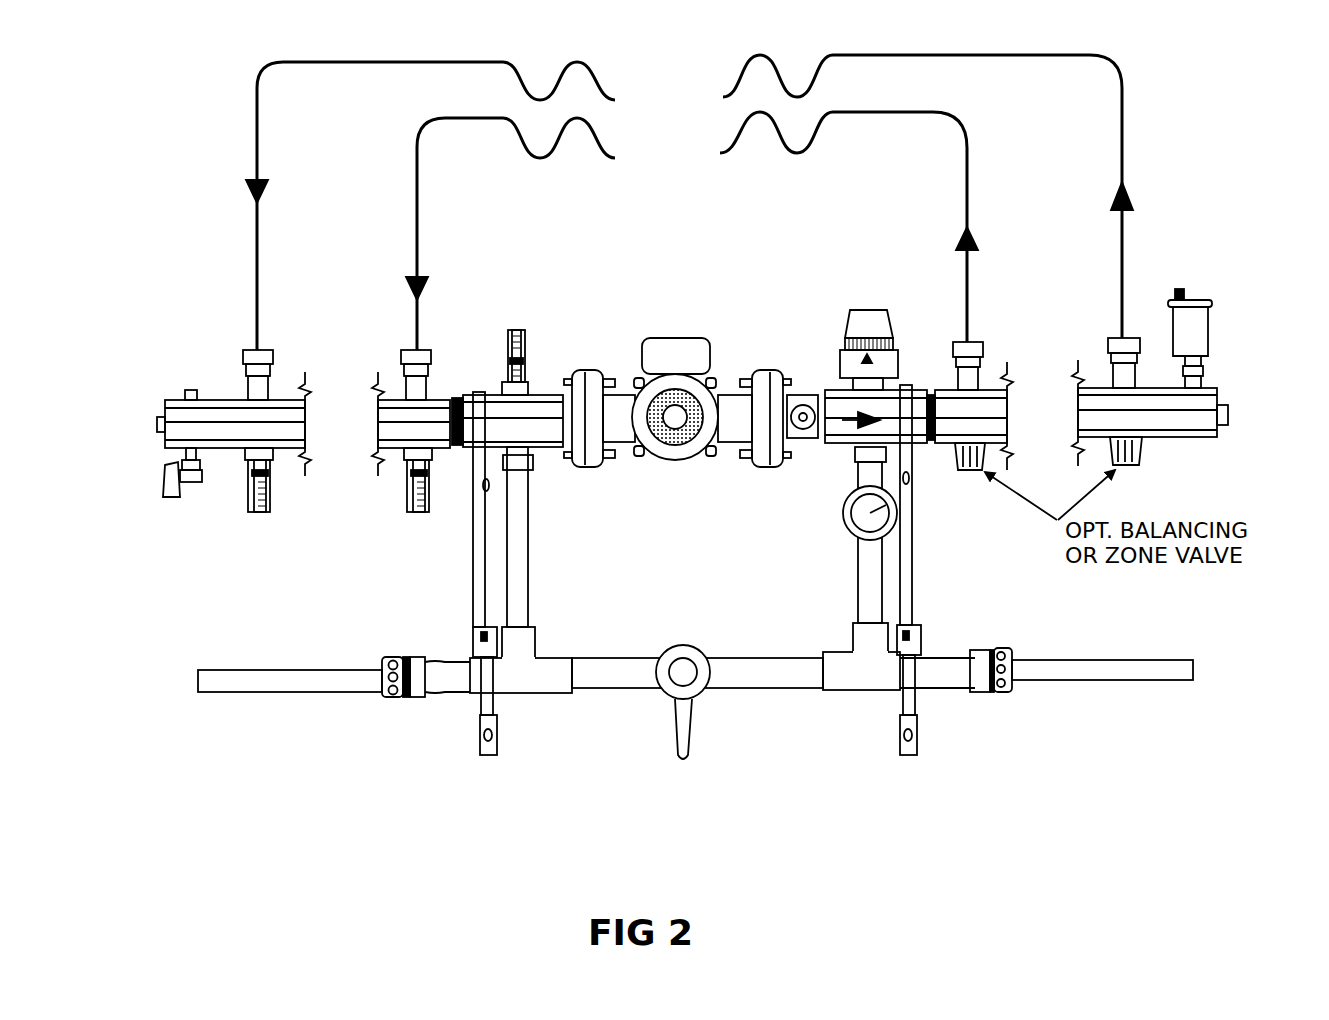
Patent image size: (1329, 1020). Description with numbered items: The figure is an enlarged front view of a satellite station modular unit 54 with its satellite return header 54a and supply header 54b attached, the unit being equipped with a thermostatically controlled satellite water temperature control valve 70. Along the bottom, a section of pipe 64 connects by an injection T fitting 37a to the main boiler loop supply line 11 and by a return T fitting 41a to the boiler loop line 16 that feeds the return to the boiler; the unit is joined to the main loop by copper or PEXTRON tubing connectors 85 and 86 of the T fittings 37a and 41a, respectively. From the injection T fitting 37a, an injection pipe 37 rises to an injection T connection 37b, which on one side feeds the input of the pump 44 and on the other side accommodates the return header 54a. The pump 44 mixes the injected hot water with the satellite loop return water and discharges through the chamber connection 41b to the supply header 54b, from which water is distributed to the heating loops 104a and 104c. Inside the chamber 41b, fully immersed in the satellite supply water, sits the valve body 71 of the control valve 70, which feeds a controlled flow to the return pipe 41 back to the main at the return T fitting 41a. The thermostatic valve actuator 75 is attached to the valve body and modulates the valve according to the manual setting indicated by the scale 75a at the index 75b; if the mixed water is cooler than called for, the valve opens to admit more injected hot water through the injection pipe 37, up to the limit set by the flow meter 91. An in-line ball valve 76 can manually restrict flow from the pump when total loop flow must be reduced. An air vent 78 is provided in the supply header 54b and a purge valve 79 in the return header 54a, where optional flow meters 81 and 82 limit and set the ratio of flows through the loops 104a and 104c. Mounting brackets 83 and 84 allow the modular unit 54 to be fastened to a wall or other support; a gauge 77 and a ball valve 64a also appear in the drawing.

The main boiler loop supply line 11 is at (255, 695).
The boiler loop line 16 is at (1120, 680).
The injection pipe 37 is at (532, 555).
The injection T fitting 37a is at (525, 695).
The injection T connection 37b is at (490, 310).
The return pipe 41 is at (860, 570).
The return T fitting 41a is at (872, 690).
The chamber connection 41b is at (832, 390).
The pump 44 is at (650, 323).
The modular unit 54 is at (678, 185).
The return header 54a is at (165, 410).
The supply header 54b is at (1218, 398).
The section of pipe 64 is at (612, 658).
The ball valve 64a is at (733, 710).
The temperature control valve 70 is at (870, 305).
The valve body 71 is at (830, 445).
The valve actuator 75 is at (888, 308).
The scale 75a is at (892, 342).
The index 75b is at (876, 358).
The in-line ball valve 76 is at (790, 332).
The pressure gauge 77 is at (845, 523).
The air vent 78 is at (1197, 300).
The purge valve 79 is at (190, 493).
The flow meter 81 is at (253, 515).
The flow meter 82 is at (408, 512).
The mounting bracket 83 is at (473, 605).
The mounting bracket 84 is at (915, 578).
The tubing connector 85 is at (390, 700).
The tubing connector 86 is at (1000, 693).
The flow meter 91 is at (500, 328).
The heating loop 104a is at (1123, 125).
The heating loop 104c is at (970, 148).